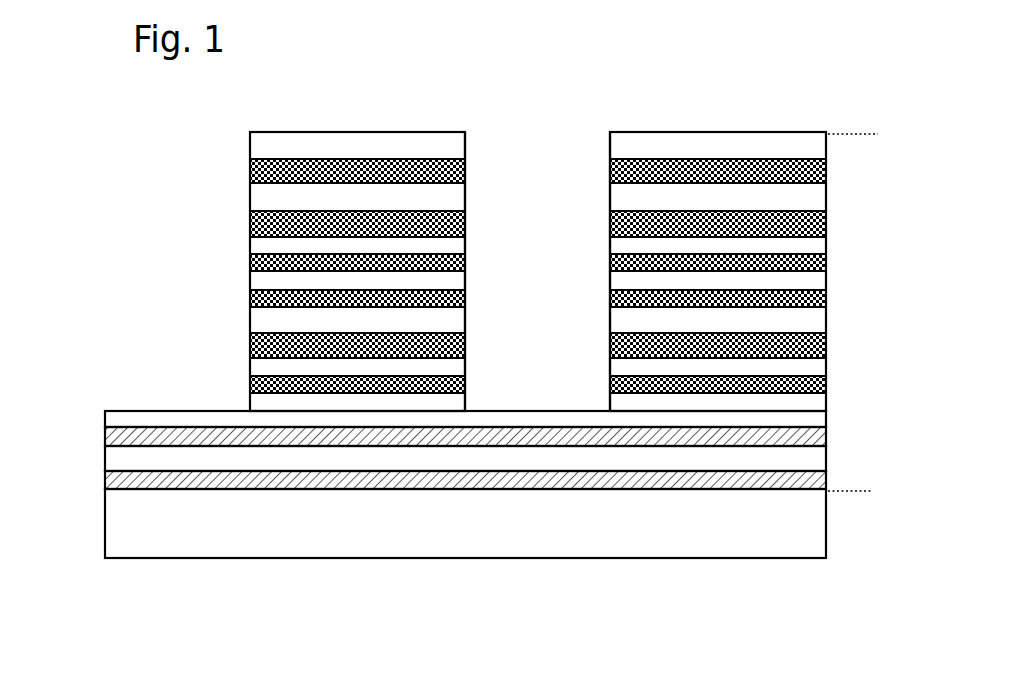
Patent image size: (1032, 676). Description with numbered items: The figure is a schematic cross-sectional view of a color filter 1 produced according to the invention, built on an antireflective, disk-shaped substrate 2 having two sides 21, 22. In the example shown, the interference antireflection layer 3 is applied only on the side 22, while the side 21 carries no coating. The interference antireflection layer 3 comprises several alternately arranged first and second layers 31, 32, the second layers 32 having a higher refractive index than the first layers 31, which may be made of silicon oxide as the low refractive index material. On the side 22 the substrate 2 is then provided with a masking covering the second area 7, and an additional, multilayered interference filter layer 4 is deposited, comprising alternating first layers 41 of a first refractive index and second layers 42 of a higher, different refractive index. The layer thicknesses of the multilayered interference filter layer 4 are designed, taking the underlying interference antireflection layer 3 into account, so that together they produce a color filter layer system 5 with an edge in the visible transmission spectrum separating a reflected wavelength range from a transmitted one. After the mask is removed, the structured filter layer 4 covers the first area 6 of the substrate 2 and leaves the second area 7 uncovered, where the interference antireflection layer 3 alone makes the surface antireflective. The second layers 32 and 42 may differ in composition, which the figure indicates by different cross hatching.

The color filter 1 is at (100, 198).
The substrate 2 is at (627, 530).
The side of the substrate 21 is at (305, 558).
The side of the substrate 22 is at (165, 490).
The interference antireflection layer 3 is at (835, 413).
The first layers 31 is at (103, 459).
The second layers 32 is at (138, 433).
The multilayered interference filter layer 4 is at (843, 135).
The first layers 41 is at (467, 317).
The second layers 42 is at (607, 232).
The color filter layer system 5 is at (888, 135).
The first area 6 is at (615, 105).
The second area 7 is at (607, 105).